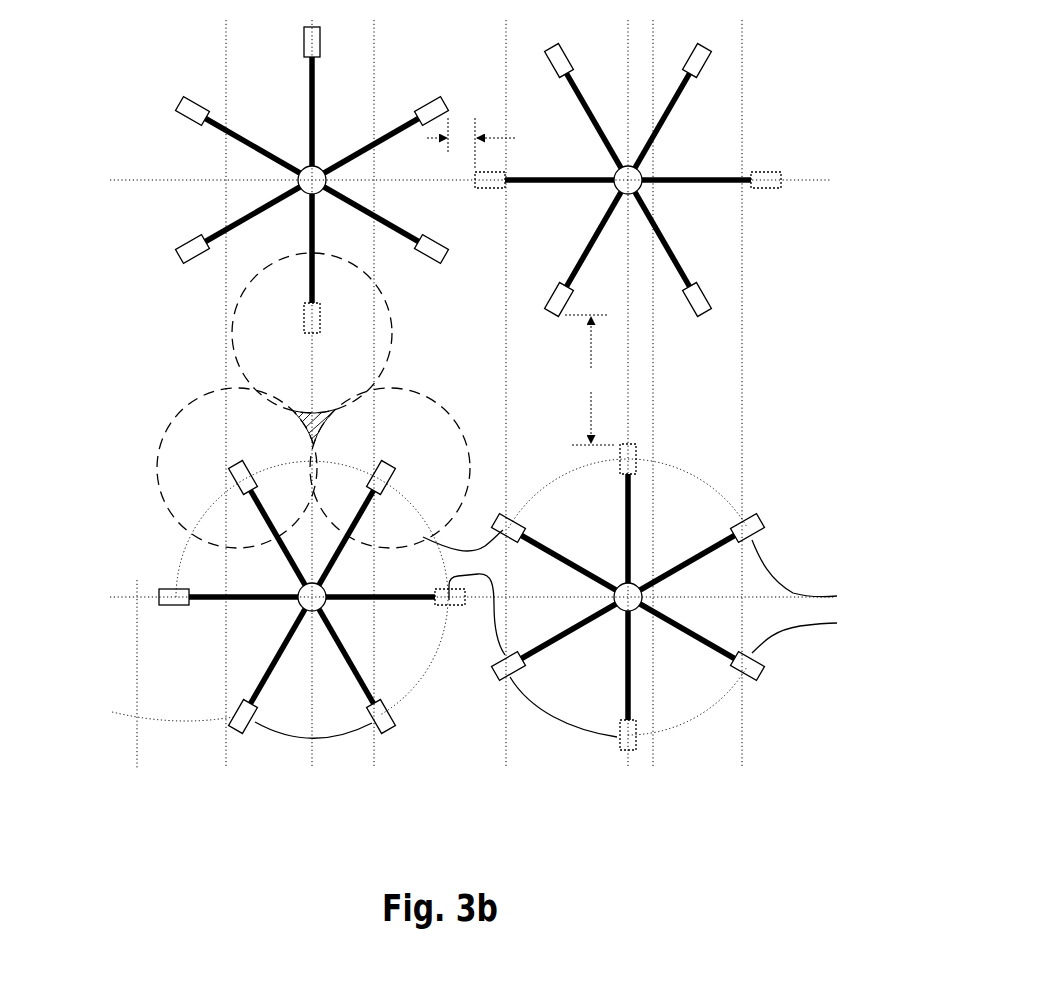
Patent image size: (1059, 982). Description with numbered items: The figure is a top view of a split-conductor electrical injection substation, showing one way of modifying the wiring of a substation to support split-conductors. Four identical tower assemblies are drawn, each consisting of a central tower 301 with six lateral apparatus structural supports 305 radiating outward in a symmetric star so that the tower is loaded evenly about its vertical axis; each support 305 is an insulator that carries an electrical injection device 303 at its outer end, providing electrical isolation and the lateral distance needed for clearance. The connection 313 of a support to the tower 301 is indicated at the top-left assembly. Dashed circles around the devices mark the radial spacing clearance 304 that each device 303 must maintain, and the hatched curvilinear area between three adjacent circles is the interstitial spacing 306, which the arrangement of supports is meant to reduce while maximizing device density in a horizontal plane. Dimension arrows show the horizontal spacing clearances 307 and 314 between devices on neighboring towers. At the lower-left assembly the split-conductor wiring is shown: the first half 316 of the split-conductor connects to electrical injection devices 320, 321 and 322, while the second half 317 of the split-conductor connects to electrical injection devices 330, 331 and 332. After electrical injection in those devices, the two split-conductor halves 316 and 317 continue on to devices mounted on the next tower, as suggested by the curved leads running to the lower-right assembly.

The tower 301 is at (319, 162).
The spoke connection 313 is at (306, 160).
The electrical injection device 303 is at (429, 102).
The lateral apparatus structural support 305 is at (384, 213).
The radial spacing clearance 304 is at (393, 329).
The interstitial spacing 306 is at (323, 424).
The horizontal spacing clearance 307 is at (590, 380).
The horizontal spacing clearance 314 is at (514, 144).
The first half of the split-conductor 316 is at (117, 603).
The second half of the split-conductor 317 is at (117, 722).
The electrical injection device 320 is at (177, 612).
The electrical injection device 321 is at (240, 461).
The electrical injection device 322 is at (383, 459).
The electrical injection device 330 is at (232, 734).
The electrical injection device 331 is at (372, 734).
The electrical injection device 332 is at (440, 612).